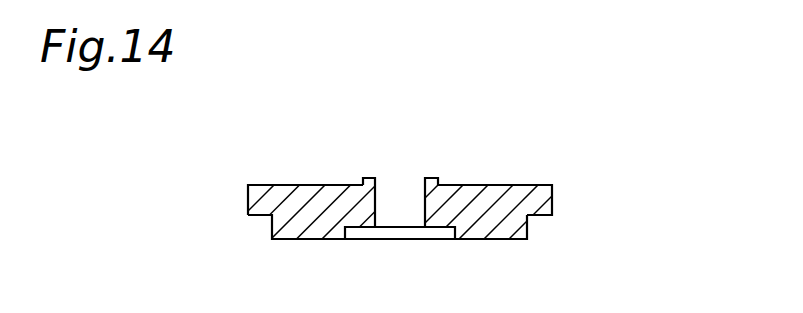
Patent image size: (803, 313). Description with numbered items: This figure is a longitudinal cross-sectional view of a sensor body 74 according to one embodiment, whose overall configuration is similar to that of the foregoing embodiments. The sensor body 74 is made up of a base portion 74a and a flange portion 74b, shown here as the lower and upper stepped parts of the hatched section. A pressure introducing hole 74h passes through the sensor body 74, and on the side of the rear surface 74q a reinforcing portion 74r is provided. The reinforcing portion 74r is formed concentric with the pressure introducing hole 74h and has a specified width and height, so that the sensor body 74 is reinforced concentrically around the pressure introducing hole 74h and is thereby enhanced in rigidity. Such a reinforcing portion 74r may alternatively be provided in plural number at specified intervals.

The sensor body 74 is at (648, 168).
The base portion 74a is at (528, 226).
The flange portion 74b is at (552, 203).
The rear surface 74q is at (288, 185).
The reinforcing portion 74r is at (433, 178).
The pressure introducing hole 74h is at (376, 227).